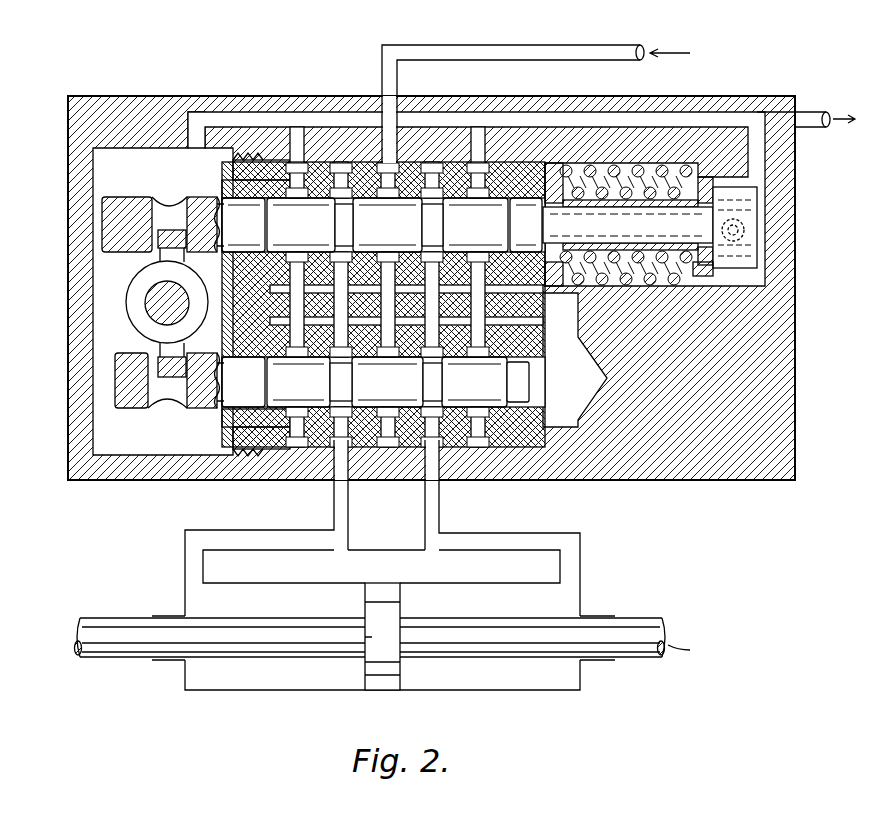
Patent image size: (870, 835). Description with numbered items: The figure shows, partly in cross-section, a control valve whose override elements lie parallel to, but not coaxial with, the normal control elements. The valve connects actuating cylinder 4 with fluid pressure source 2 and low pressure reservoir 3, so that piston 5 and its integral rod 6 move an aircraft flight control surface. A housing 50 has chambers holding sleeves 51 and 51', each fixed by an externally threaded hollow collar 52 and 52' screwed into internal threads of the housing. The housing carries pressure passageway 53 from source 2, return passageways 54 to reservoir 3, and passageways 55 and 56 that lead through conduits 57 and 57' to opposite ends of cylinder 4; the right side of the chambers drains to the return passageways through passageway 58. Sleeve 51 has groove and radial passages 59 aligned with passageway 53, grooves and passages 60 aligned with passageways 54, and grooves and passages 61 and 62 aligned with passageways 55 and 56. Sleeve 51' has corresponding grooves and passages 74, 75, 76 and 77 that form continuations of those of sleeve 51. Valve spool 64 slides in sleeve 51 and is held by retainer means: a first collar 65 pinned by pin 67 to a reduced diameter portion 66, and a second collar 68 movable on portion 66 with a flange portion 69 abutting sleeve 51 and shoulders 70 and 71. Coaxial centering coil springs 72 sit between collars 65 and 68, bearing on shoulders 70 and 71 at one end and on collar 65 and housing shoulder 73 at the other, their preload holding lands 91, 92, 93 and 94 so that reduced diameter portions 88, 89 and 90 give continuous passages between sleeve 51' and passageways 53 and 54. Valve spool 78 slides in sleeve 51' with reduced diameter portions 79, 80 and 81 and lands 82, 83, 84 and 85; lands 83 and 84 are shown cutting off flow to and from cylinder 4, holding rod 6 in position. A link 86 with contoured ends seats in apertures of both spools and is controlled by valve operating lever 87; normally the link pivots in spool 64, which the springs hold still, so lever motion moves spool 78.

The fluid pressure source 2 is at (735, 55).
The low pressure reservoir 3 is at (807, 91).
The actuating cylinder 4 is at (305, 692).
The piston 5 is at (380, 690).
The rod 6 is at (633, 645).
The housing 50 is at (700, 480).
The sleeve 51 is at (368, 304).
The sleeve 51' is at (245, 430).
The externally threaded hollow collar 52 is at (246, 166).
The externally threaded hollow collar 52' is at (239, 467).
The pressure passageway 53 is at (386, 140).
The low pressure return passageways 54 is at (292, 142).
The passageway 55 is at (345, 478).
The passageway 56 is at (428, 478).
The conduit 57 is at (284, 557).
The conduit 57' is at (480, 559).
The passageway 58 is at (760, 158).
The annular groove and radial passages 59 is at (393, 163).
The annular grooves and radial passages 60 is at (298, 160).
The annular groove and radial passages 61 is at (358, 165).
The annular groove and radial passages 62 is at (432, 163).
The valve spool 64 is at (130, 198).
The first collar 65 is at (742, 264).
The reduced diameter portion 66 is at (628, 225).
The pin 67 is at (738, 231).
The second collar 68 is at (590, 250).
The flange portion 69 is at (552, 168).
The shoulder 70 is at (547, 242).
The shoulder 71 is at (580, 300).
The centering coil springs 72 is at (705, 277).
The shoulder 73 is at (706, 180).
The annular groove and radial passages 74 is at (386, 531).
The annular groove and radial passages 75 is at (292, 450).
The annular groove and radial passages 76 is at (340, 448).
The annular groove and radial passages 77 is at (440, 448).
The valve spool 78 is at (117, 412).
The reduced diameter portion 79 is at (298, 382).
The reduced diameter portion 80 is at (387, 382).
The reduced diameter portion 81 is at (474, 382).
The land 82 is at (228, 388).
The land 83 is at (338, 370).
The land 84 is at (438, 370).
The land 85 is at (520, 400).
The link 86 is at (140, 278).
The valve operating lever 87 is at (158, 310).
The reduced diameter portion 88 is at (301, 225).
The reduced diameter portion 89 is at (387, 225).
The reduced diameter portion 90 is at (475, 225).
The land 91 is at (243, 225).
The land 92 is at (343, 200).
The land 93 is at (430, 203).
The land 94 is at (526, 225).